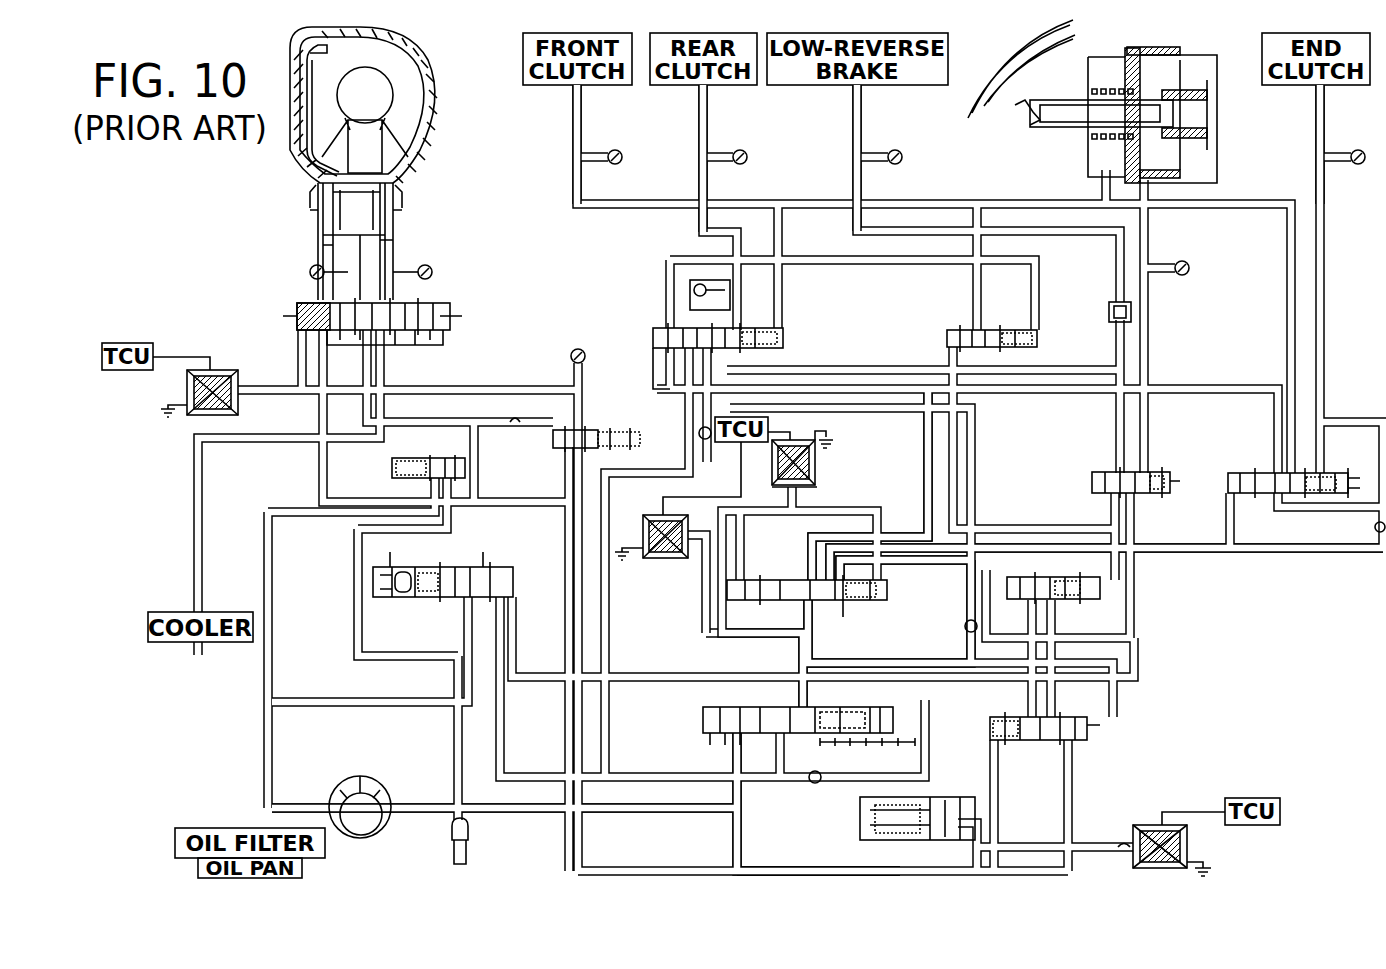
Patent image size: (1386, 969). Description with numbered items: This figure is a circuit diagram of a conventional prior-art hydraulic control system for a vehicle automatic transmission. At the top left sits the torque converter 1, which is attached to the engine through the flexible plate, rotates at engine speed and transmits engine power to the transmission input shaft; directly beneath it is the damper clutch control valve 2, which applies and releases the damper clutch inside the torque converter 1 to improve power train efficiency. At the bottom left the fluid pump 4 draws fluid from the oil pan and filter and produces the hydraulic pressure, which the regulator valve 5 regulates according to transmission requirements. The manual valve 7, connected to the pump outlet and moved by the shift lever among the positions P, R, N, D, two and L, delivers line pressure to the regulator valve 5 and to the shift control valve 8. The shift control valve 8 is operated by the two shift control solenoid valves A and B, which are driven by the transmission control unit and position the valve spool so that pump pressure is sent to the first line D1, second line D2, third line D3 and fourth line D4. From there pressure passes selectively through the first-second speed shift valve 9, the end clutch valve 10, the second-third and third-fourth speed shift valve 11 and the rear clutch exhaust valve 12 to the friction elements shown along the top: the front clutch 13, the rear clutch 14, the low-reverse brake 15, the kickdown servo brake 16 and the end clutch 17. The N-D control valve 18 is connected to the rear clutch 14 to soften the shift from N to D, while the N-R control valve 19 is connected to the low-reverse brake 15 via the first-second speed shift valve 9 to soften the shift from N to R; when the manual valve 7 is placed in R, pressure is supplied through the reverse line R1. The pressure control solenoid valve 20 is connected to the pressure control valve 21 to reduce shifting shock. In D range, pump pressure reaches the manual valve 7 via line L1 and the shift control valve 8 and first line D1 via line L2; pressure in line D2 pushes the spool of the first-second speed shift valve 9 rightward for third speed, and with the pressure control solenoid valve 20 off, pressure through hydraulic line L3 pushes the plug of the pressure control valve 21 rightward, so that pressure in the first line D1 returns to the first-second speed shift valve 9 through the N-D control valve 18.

The torque converter 1 is at (279, 181).
The damper clutch control valve 2 is at (460, 272).
The fluid pump 4 is at (365, 830).
The regulator valve 5 is at (415, 598).
The manual valve 7 is at (702, 708).
The shift control valve 8 is at (855, 602).
The first-second speed shift valve 9 is at (1108, 472).
The end clutch valve 10 is at (1246, 474).
The second-third and third-fourth speed shift valve 11 is at (945, 333).
The rear clutch exhaust valve 12 is at (653, 330).
The front clutch 13 is at (548, 88).
The rear clutch 14 is at (680, 88).
The low-reverse brake 15 is at (812, 88).
The kickdown servo brake 16 is at (990, 133).
The end clutch 17 is at (1293, 88).
The N-D control valve 18 is at (1100, 590).
The N-R control valve 19 is at (860, 817).
The pressure control solenoid valve 20 is at (1150, 828).
The pressure control valve 21 is at (1087, 724).
The shift control solenoid valve A is at (836, 466).
The shift control solenoid valve B is at (668, 585).
The first line D1 is at (928, 660).
The second line D2 is at (918, 528).
The third line D3 is at (960, 552).
The fourth line D4 is at (898, 568).
The line L1 is at (637, 812).
The line L2 is at (800, 645).
The hydraulic line L3 is at (732, 827).
The reverse line R1 is at (800, 862).